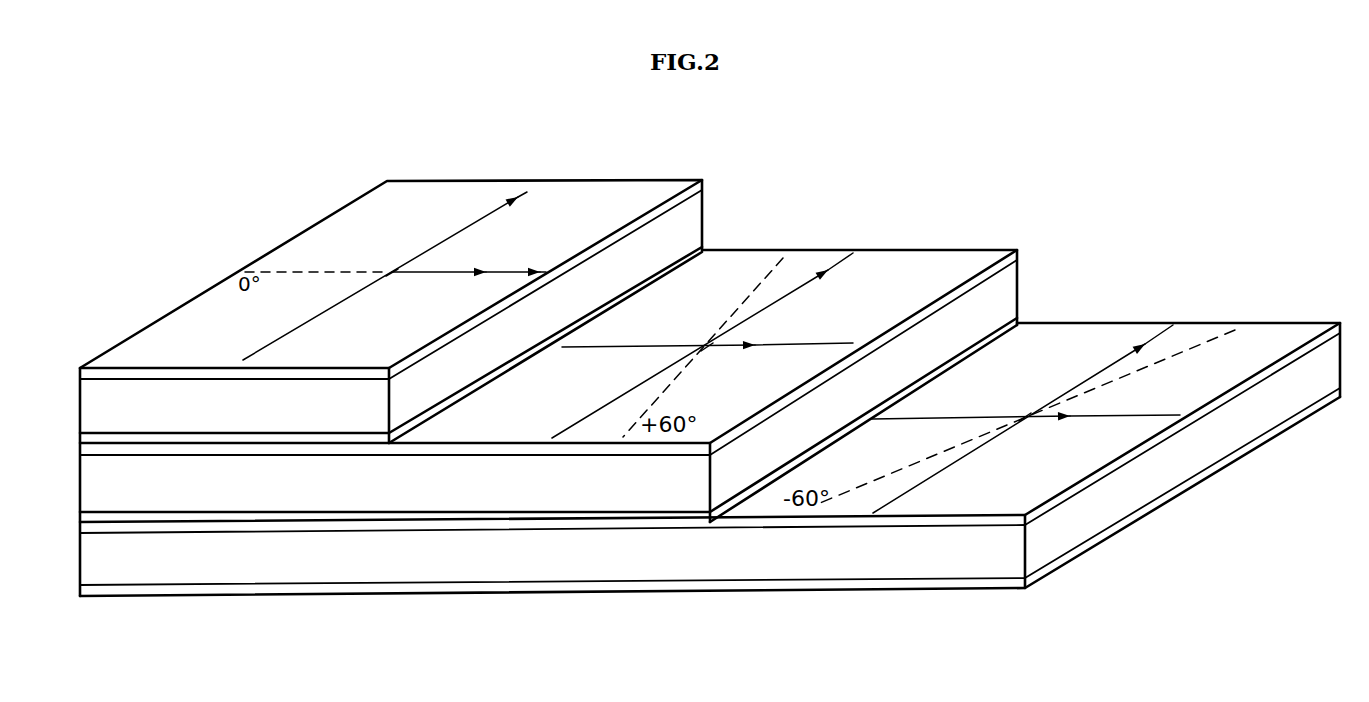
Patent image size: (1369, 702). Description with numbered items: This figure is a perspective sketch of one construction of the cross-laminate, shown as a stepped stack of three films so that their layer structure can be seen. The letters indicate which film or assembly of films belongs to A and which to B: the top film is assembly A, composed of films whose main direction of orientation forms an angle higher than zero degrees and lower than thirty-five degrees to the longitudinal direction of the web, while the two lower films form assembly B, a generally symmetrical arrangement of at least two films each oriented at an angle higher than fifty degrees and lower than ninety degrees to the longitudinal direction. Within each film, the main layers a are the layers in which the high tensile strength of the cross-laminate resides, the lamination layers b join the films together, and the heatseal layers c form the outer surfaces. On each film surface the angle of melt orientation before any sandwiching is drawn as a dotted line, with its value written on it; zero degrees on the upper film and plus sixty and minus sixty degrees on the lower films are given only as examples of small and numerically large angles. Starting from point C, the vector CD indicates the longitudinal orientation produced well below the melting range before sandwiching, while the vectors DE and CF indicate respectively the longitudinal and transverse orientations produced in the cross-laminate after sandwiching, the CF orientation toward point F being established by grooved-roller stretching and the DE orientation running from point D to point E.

The film assembly A is at (391, 388).
The film assembly B is at (710, 423).
The main layer a is at (93, 413).
The lamination layer b is at (92, 452).
The heatseal layer c is at (80, 372).
The vector origin point C is at (706, 337).
The vector point D is at (439, 263).
The vector point E is at (833, 334).
The vector point F is at (708, 349).